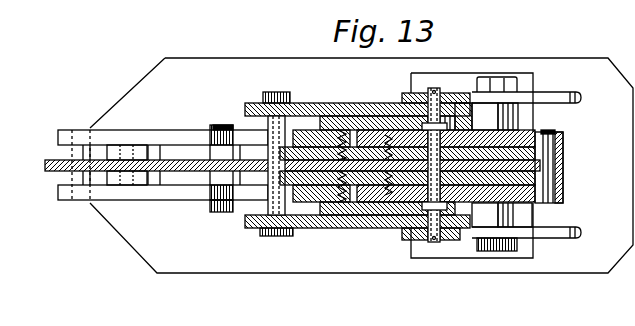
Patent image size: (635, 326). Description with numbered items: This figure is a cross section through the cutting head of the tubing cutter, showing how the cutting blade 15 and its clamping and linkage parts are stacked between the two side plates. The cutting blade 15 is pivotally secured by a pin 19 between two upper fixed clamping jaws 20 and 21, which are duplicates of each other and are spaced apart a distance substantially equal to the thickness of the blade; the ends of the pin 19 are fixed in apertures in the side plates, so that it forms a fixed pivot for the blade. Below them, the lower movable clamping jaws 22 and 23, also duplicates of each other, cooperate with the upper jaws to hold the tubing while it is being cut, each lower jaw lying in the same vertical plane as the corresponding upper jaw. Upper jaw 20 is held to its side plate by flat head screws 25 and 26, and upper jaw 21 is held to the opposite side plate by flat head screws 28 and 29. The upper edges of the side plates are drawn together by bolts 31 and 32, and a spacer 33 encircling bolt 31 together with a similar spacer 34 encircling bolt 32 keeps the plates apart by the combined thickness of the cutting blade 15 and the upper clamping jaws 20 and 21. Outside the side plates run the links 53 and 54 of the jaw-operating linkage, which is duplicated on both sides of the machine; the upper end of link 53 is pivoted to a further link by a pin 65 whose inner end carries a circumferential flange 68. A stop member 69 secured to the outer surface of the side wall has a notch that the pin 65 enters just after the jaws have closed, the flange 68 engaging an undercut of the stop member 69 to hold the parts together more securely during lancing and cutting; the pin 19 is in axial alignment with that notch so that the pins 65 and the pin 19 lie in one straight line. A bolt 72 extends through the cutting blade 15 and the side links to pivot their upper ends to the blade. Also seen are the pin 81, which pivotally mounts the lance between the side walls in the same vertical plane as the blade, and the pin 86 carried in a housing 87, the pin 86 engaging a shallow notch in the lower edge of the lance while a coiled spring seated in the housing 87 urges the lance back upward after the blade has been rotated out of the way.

The cutting blade 15 is at (181, 172).
The pin 19 is at (402, 228).
The upper fixed clamping jaw 20 is at (354, 145).
The upper fixed clamping jaw 21 is at (352, 178).
The lower movable clamping jaw 22 is at (172, 150).
The lower movable clamping jaw 23 is at (167, 178).
The flat head screw 25 is at (310, 120).
The flat head screw 26 is at (510, 118).
The flat head screw 28 is at (312, 205).
The flat head screw 29 is at (533, 212).
The bolt 31 is at (223, 212).
The bolt 32 is at (550, 170).
The spacer 33 is at (216, 184).
The spacer 34 is at (563, 156).
The link 53 is at (570, 239).
The link 54 is at (571, 92).
The pin 65 is at (446, 123).
The circumferential flange 68 is at (428, 88).
The stop member 69 is at (377, 120).
The bolt 72 is at (267, 125).
The pin 81 is at (83, 176).
The pin 86 is at (134, 152).
The housing 87 is at (117, 178).